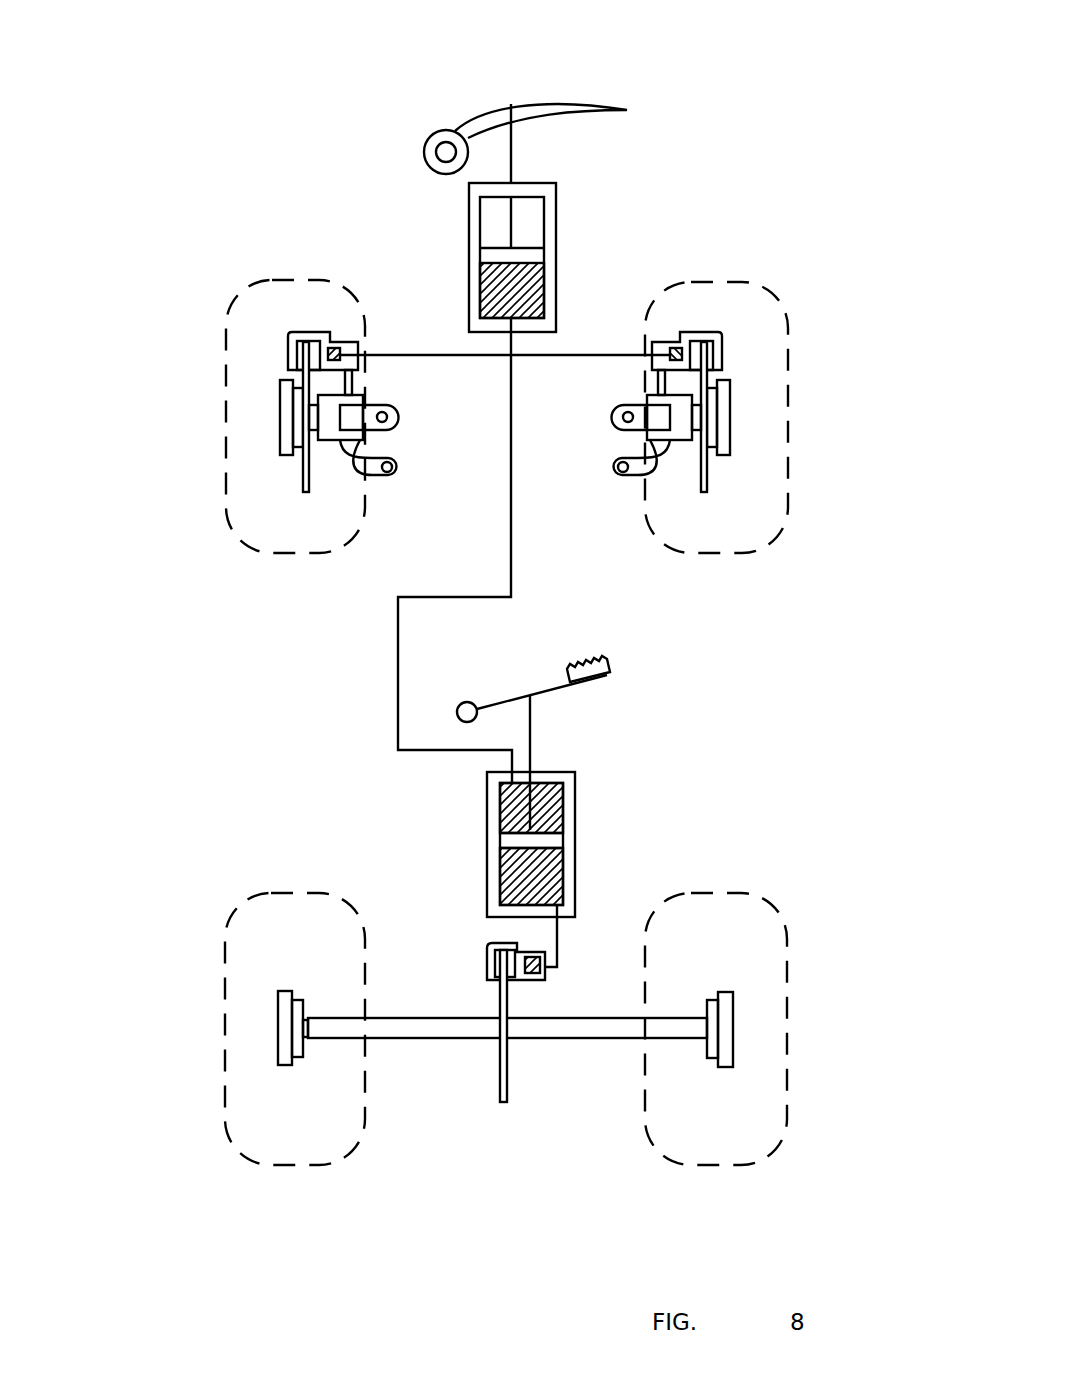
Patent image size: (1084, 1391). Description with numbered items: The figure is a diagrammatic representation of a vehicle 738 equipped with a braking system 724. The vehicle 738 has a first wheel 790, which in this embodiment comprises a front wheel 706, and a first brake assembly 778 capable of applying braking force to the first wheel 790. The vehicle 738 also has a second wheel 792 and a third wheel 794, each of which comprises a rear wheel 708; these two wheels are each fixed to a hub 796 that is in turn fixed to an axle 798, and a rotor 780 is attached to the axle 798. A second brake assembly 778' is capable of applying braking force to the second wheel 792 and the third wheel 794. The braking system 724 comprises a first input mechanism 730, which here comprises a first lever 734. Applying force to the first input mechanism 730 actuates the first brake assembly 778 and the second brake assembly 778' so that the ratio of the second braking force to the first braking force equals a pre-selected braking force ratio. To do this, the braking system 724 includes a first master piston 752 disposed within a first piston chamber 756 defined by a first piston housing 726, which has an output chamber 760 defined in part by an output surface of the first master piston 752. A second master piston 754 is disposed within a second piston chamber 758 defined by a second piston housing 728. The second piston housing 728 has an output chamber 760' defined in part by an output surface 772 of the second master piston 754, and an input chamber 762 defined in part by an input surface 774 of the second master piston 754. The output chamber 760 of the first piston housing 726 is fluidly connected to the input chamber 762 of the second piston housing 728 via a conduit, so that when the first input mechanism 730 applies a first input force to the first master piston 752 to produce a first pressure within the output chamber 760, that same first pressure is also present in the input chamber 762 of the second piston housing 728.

The front wheel 706 is at (770, 533).
The rear wheel 708 is at (310, 1162).
The braking system 724 is at (550, 1160).
The first piston housing 726 is at (473, 220).
The second piston housing 728 is at (545, 777).
The first input mechanism 730 is at (470, 98).
The first lever 734 is at (528, 100).
The vehicle 738 is at (548, 1215).
The first master piston 752 is at (528, 257).
The second master piston 754 is at (547, 810).
The first piston chamber 756 is at (520, 223).
The second piston chamber 758 is at (547, 793).
The output chamber 760 is at (461, 291).
The output chamber 760' is at (451, 876).
The input chamber 762 is at (535, 842).
The output surface 772 is at (512, 862).
The input surface 774 is at (518, 838).
The first brake assembly 778 is at (749, 367).
The second brake assembly 778' is at (663, 862).
The rotor 780 is at (500, 1102).
The first wheel 790 is at (743, 287).
The second wheel 792 is at (740, 893).
The third wheel 794 is at (272, 898).
The hub 796 is at (278, 1026).
The axle 798 is at (437, 1038).